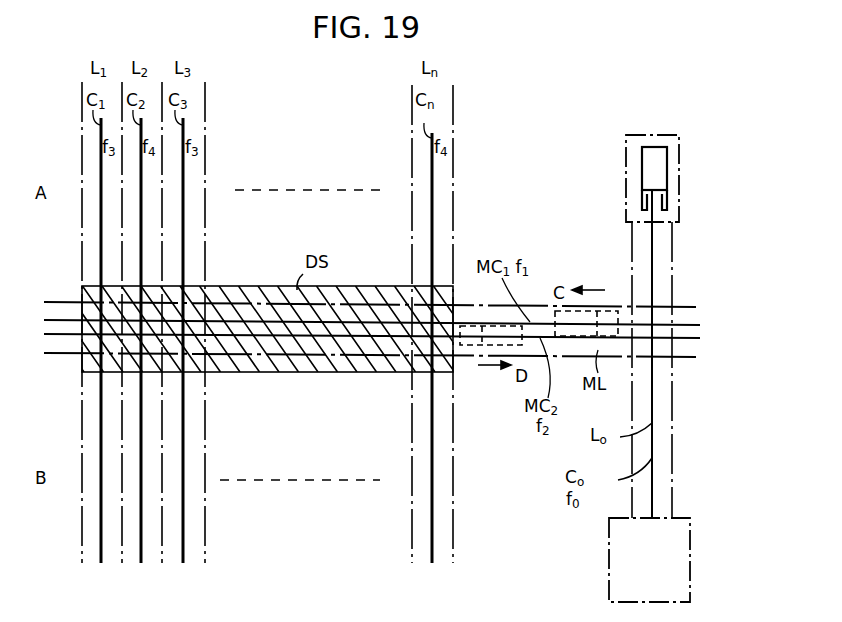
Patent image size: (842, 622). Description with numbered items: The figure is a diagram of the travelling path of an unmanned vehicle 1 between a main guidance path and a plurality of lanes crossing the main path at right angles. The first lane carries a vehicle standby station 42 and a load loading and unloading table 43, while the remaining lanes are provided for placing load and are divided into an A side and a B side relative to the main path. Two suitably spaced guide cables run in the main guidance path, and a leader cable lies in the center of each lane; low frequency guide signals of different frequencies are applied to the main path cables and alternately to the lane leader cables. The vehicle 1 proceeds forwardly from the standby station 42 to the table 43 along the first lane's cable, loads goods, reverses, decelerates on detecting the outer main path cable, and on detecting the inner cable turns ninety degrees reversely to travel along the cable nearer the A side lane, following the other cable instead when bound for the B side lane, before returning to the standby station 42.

The unmanned vehicle 1 is at (645, 163).
The vehicle standby station 42 is at (660, 135).
The load loading and unloading table 43 is at (609, 573).